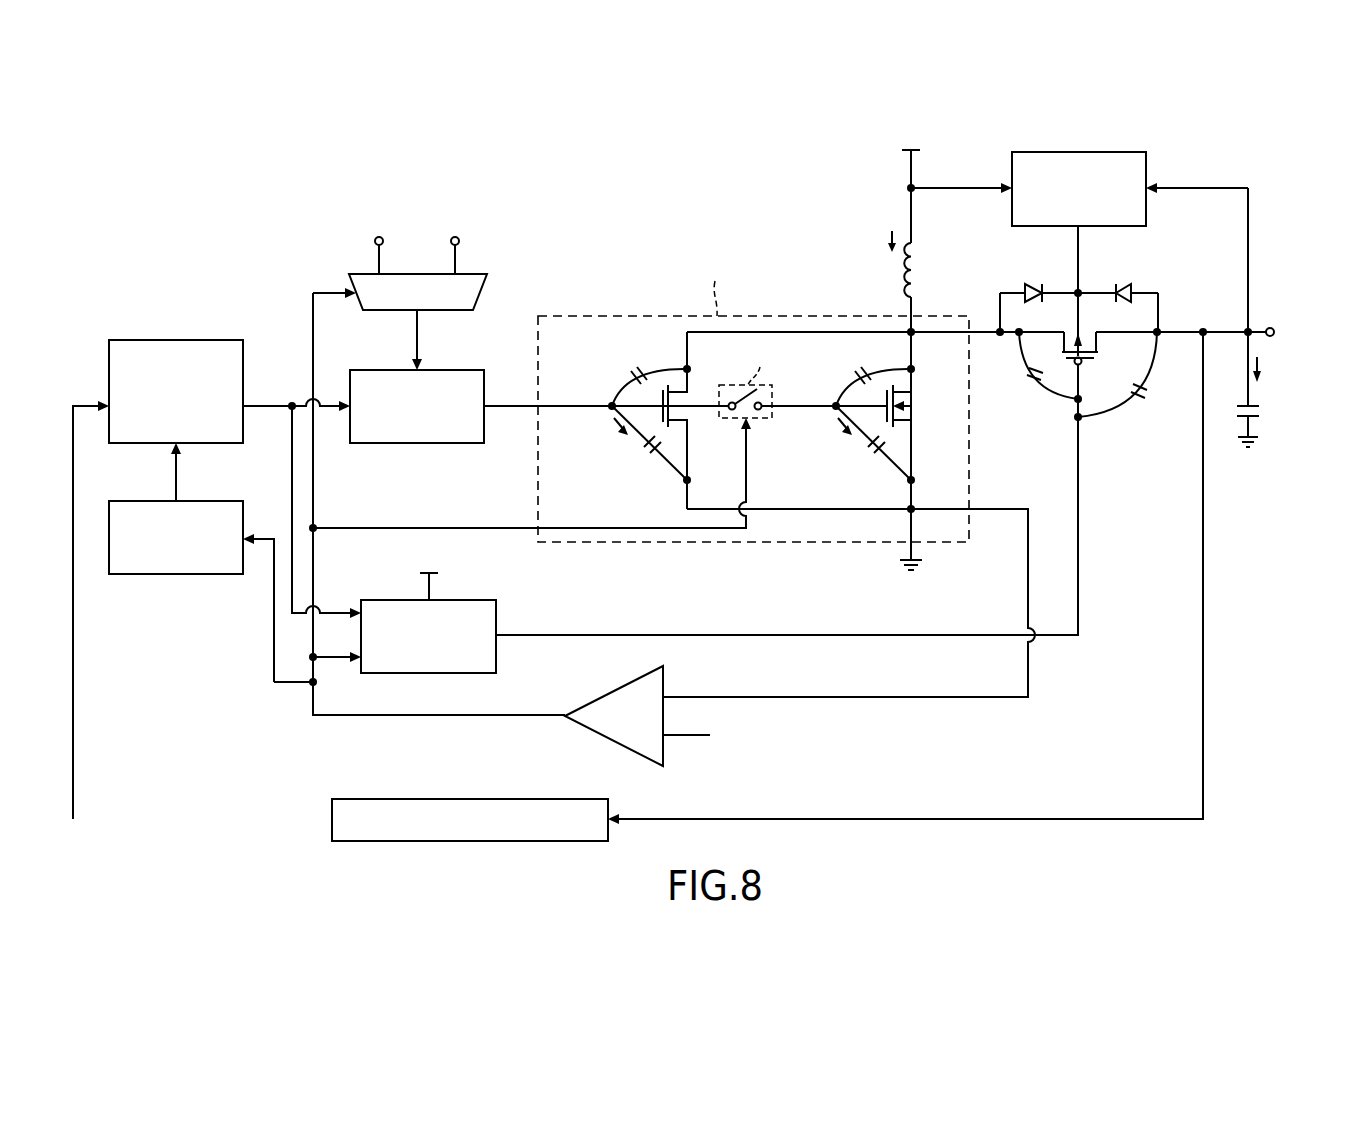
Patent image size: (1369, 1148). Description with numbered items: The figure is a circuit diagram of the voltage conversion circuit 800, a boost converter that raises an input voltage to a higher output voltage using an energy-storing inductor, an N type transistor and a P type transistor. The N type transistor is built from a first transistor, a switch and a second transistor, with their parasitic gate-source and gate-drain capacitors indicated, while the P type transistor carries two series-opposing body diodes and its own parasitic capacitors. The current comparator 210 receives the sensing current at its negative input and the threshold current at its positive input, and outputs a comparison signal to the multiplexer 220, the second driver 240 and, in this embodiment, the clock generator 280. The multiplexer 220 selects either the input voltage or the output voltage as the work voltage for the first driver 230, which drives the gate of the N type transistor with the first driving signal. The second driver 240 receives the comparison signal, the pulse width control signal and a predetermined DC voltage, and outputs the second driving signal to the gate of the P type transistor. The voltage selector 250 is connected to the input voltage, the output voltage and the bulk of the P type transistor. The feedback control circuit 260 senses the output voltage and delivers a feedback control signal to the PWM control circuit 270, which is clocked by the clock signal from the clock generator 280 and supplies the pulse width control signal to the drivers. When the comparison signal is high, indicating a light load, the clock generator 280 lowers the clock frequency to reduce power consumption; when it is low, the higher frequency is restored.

The voltage conversion circuit 800 is at (122, 175).
The current comparator 210 is at (605, 738).
The multiplexer 220 is at (350, 273).
The first driver 230 is at (467, 370).
The second driver 240 is at (496, 650).
The voltage selector 250 is at (1110, 152).
The feedback control circuit 260 is at (411, 799).
The PWM control circuit 270 is at (171, 340).
The clock generator 280 is at (138, 574).